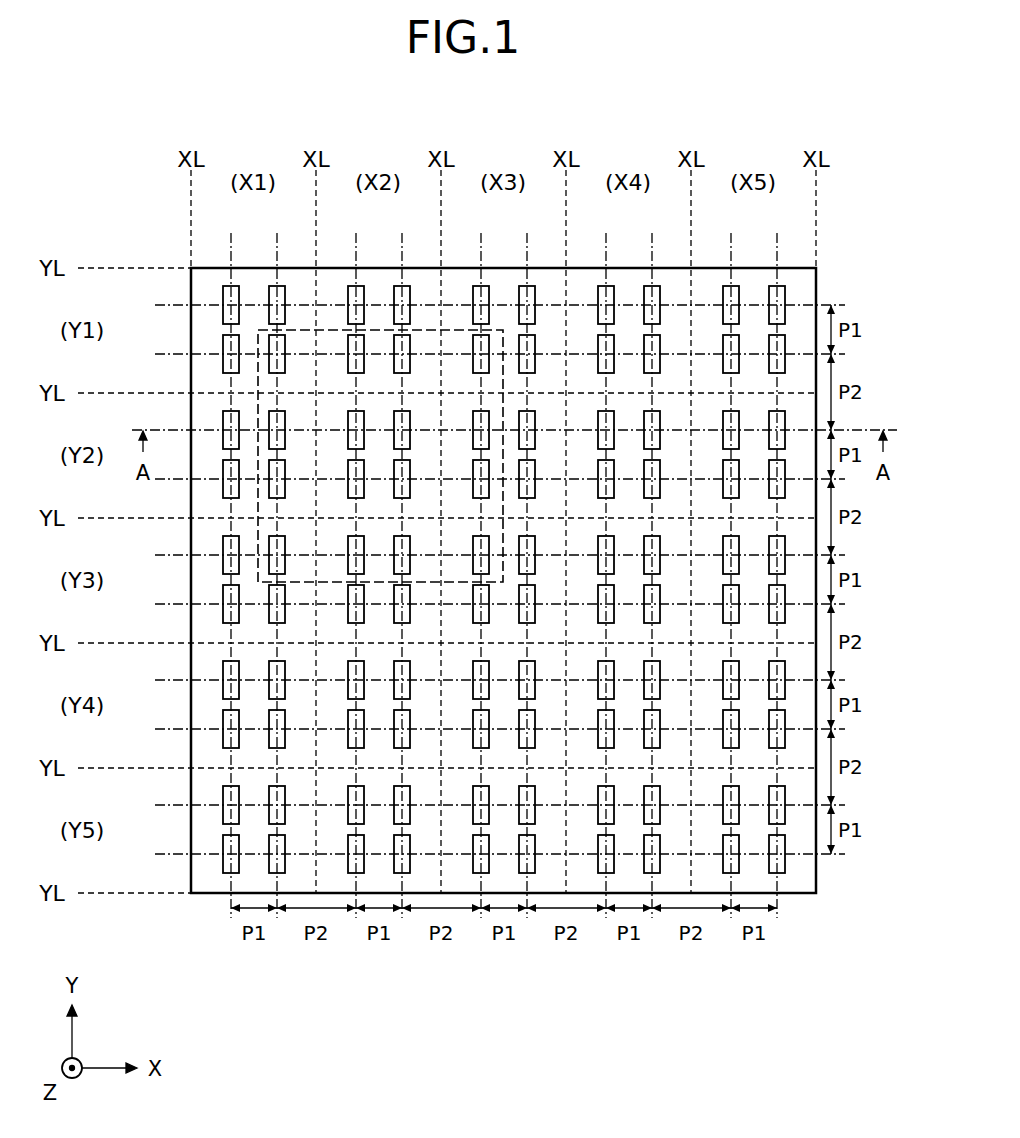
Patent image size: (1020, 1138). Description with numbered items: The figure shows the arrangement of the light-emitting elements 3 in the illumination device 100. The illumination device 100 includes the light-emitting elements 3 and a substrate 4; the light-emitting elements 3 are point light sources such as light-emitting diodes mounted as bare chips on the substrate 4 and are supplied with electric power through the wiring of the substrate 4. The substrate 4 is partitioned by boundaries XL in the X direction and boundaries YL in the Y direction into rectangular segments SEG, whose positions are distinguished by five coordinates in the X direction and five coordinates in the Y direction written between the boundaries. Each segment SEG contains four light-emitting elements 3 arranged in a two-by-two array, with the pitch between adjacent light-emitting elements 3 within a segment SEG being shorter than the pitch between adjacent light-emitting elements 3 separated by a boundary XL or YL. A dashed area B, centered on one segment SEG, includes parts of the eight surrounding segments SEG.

The illumination device 100 is at (156, 188).
The light-emitting element 3 is at (771, 337).
The substrate 4 is at (788, 278).
The segment SEG is at (800, 290).
The area B is at (328, 330).